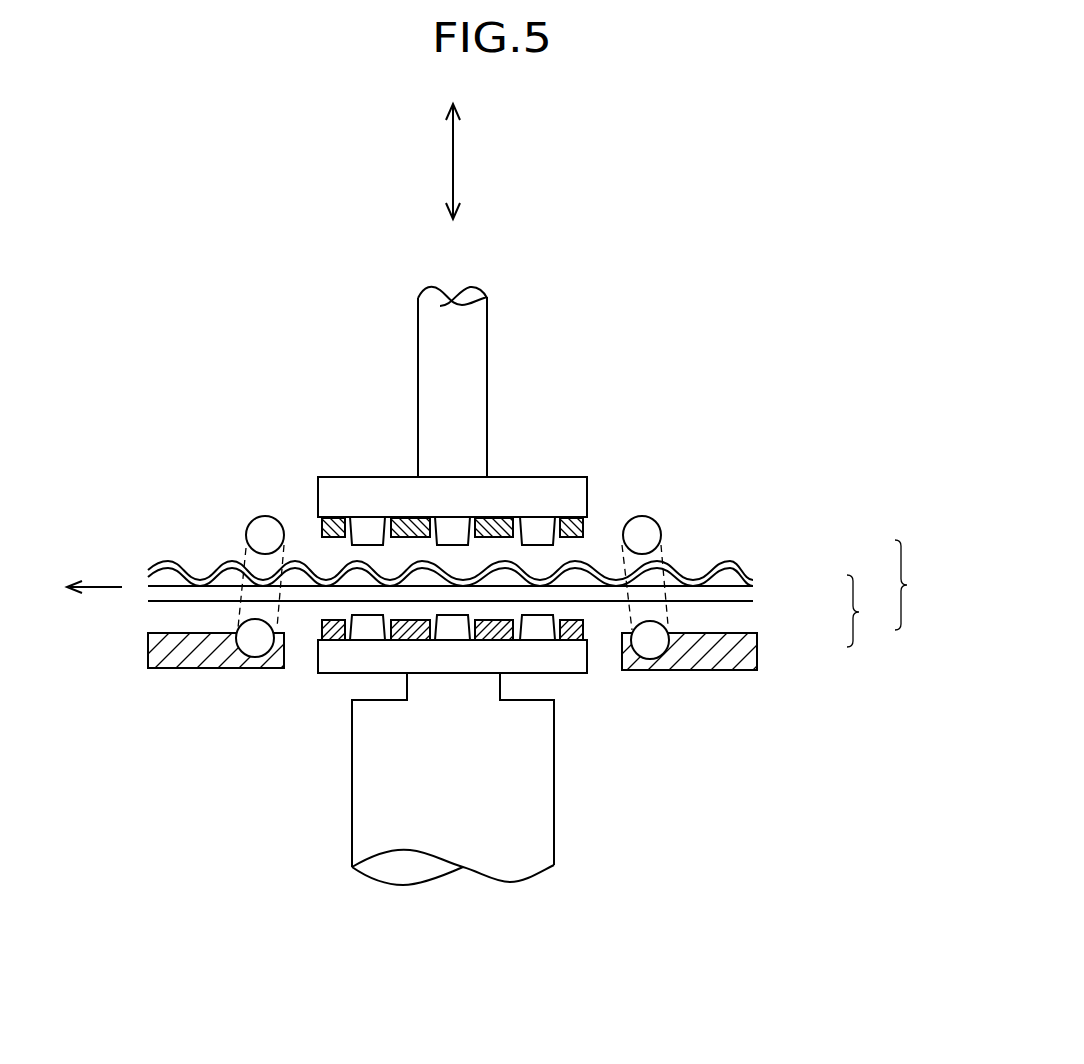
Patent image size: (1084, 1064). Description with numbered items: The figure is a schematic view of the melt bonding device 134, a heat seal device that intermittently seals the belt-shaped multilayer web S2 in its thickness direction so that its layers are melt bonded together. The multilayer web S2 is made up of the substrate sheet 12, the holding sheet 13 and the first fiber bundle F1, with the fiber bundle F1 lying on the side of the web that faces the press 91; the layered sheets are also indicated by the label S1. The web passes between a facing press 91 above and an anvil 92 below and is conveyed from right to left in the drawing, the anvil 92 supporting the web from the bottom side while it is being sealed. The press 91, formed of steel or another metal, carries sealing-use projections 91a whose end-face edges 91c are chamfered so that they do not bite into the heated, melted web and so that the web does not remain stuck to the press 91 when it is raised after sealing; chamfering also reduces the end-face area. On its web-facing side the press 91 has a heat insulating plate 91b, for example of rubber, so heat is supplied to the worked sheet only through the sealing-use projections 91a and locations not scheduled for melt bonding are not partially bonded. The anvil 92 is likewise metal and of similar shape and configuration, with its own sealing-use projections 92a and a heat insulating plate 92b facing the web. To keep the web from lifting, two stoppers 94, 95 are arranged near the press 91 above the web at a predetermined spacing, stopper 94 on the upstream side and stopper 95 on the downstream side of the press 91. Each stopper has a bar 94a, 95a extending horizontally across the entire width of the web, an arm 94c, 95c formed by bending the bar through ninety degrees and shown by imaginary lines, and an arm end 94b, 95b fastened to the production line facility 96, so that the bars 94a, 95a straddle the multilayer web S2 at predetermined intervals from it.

The melt bonding device 134 is at (717, 235).
The press 91 is at (568, 497).
The sealing-use projections 91a is at (367, 527).
The heat insulating plate 91b is at (320, 527).
The edges 91c is at (347, 546).
The anvil 92 is at (567, 658).
The sealing-use projections 92a is at (370, 632).
The heat insulating plate 92b is at (325, 630).
The stopper 94 is at (717, 591).
The bar 94a is at (642, 532).
The arm end 94b is at (650, 643).
The arm 94c is at (657, 612).
The stopper 95 is at (179, 597).
The bar 95a is at (258, 525).
The arm end 95b is at (252, 648).
The arm 95c is at (253, 612).
The production line facility 96 is at (167, 660).
The first fiber bundle F1 is at (775, 568).
The substrate sheet 12 is at (775, 585).
The holding sheet 13 is at (775, 601).
The sheet laminate S1 is at (867, 611).
The multilayer web S2 is at (916, 585).